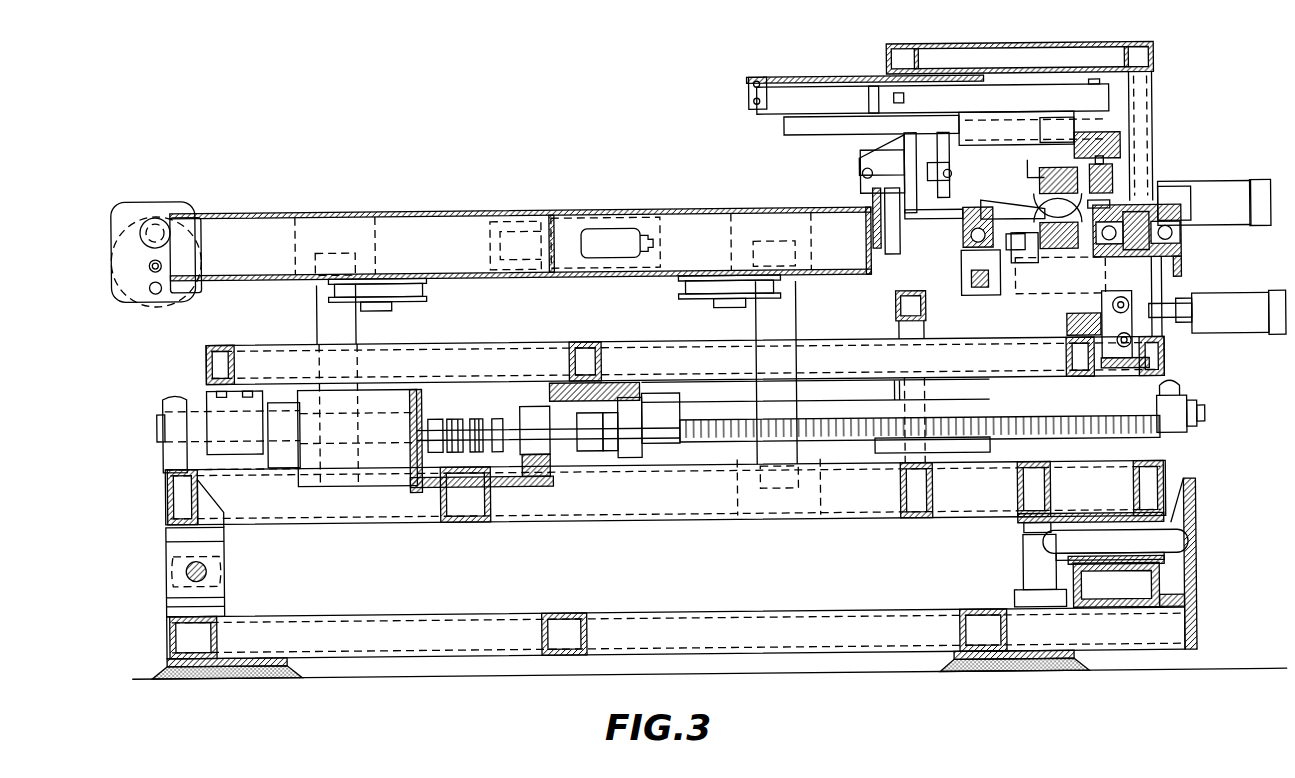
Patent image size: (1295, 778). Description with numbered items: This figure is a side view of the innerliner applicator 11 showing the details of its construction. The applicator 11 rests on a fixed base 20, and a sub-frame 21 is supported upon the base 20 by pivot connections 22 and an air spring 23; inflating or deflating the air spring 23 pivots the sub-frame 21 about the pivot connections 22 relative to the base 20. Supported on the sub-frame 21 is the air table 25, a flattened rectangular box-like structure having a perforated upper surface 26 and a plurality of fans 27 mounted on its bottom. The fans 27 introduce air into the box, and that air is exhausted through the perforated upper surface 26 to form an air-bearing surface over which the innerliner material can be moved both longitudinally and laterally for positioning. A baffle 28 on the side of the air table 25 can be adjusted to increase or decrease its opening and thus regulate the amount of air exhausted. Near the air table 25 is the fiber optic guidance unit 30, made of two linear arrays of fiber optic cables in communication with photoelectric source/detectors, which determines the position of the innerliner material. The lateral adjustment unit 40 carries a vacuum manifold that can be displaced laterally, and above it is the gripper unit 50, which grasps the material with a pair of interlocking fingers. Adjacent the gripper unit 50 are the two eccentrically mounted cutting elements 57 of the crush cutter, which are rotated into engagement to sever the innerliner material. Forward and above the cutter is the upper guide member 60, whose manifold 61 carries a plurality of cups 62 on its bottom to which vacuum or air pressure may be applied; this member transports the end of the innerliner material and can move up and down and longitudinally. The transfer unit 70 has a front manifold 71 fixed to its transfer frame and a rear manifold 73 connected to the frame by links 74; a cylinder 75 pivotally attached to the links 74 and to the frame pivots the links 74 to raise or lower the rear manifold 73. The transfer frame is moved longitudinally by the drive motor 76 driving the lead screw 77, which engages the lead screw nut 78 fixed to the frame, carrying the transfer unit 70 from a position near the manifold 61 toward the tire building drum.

The applicator 11 is at (1172, 68).
The base 20 is at (710, 623).
The sub-frame 21 is at (707, 497).
The pivot connections 22 is at (177, 565).
The air spring 23 is at (1170, 546).
The air table 25 is at (238, 277).
The perforated upper surface 26 is at (440, 209).
The fans 27 is at (417, 285).
The baffle 28 is at (632, 243).
The fiber optic guidance unit 30 is at (877, 195).
The lateral adjustment unit 40 is at (967, 232).
The gripper unit 50 is at (958, 188).
The cutting elements 57 is at (1043, 182).
The upper guide member 60 is at (1115, 172).
The manifold 61 is at (1118, 198).
The cups 62 is at (1115, 208).
The transfer unit 70 is at (1093, 251).
The front manifold 71 is at (1160, 247).
The rear manifold 73 is at (1185, 236).
The links 74 is at (1133, 296).
The cylinder 75 is at (1252, 325).
The drive motor 76 is at (282, 468).
The lead screw 77 is at (960, 433).
The lead screw nut 78 is at (662, 430).